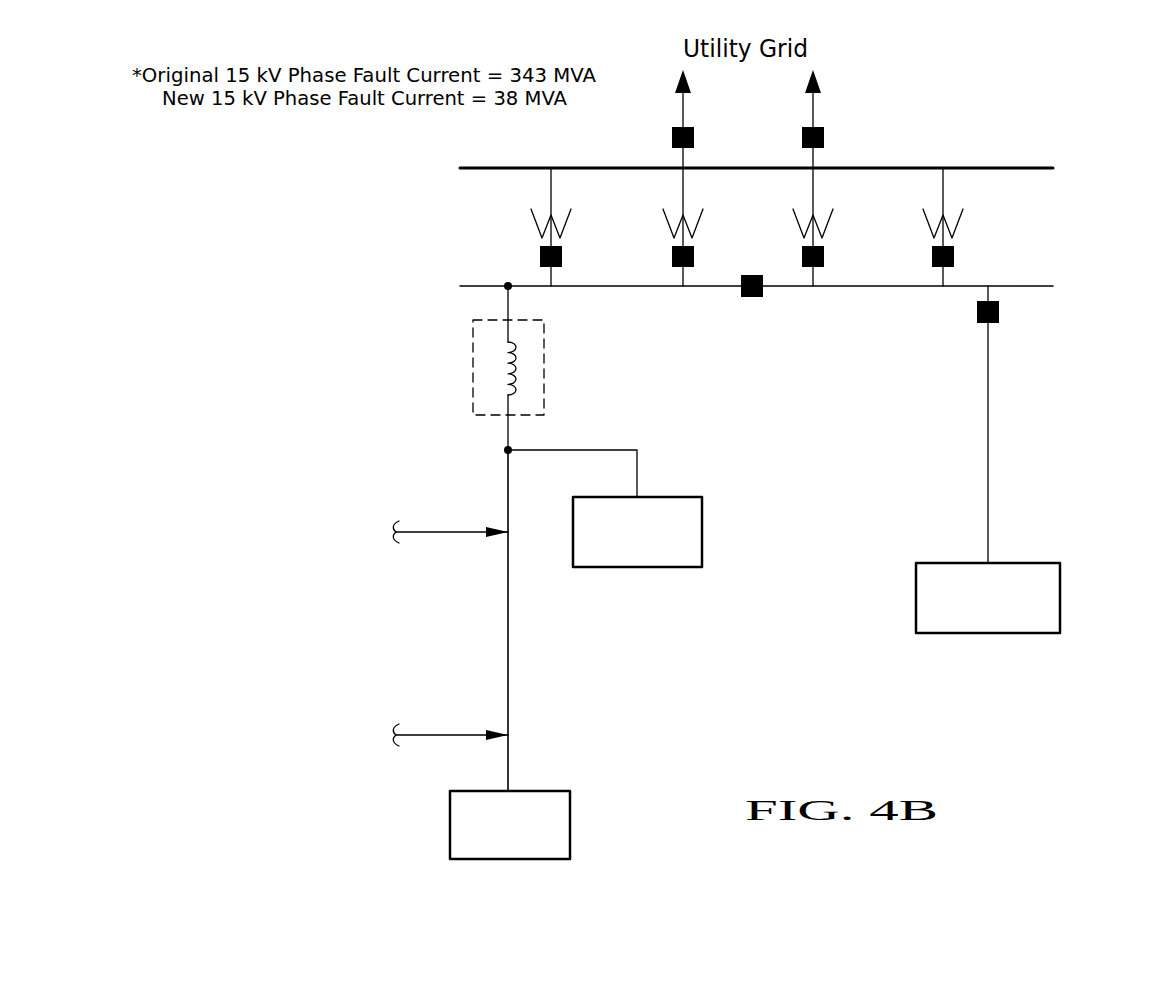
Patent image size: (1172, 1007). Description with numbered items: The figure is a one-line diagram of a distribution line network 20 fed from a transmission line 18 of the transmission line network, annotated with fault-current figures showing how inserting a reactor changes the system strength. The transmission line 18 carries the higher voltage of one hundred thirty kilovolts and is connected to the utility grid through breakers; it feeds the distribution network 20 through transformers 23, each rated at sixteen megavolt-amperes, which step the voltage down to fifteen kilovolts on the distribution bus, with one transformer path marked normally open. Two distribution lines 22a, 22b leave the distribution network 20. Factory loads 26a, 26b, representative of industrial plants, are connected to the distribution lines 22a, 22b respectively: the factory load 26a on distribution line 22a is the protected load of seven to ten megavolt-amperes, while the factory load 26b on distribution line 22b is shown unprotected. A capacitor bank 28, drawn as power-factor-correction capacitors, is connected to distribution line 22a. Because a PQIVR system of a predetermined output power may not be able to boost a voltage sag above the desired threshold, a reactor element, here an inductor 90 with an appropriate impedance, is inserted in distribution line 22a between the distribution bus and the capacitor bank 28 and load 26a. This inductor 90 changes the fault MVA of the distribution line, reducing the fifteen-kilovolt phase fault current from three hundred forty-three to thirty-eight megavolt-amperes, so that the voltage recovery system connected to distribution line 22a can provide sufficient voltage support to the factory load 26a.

The transmission line 18 is at (905, 168).
The distribution line network 20 is at (845, 287).
The first transformer 23 is at (573, 220).
The inductor 90 is at (544, 365).
The capacitor bank 28 is at (702, 538).
The distribution line 22a is at (510, 637).
The distribution line 22b is at (988, 457).
The factory load 26a is at (570, 820).
The factory load 26b is at (1008, 633).